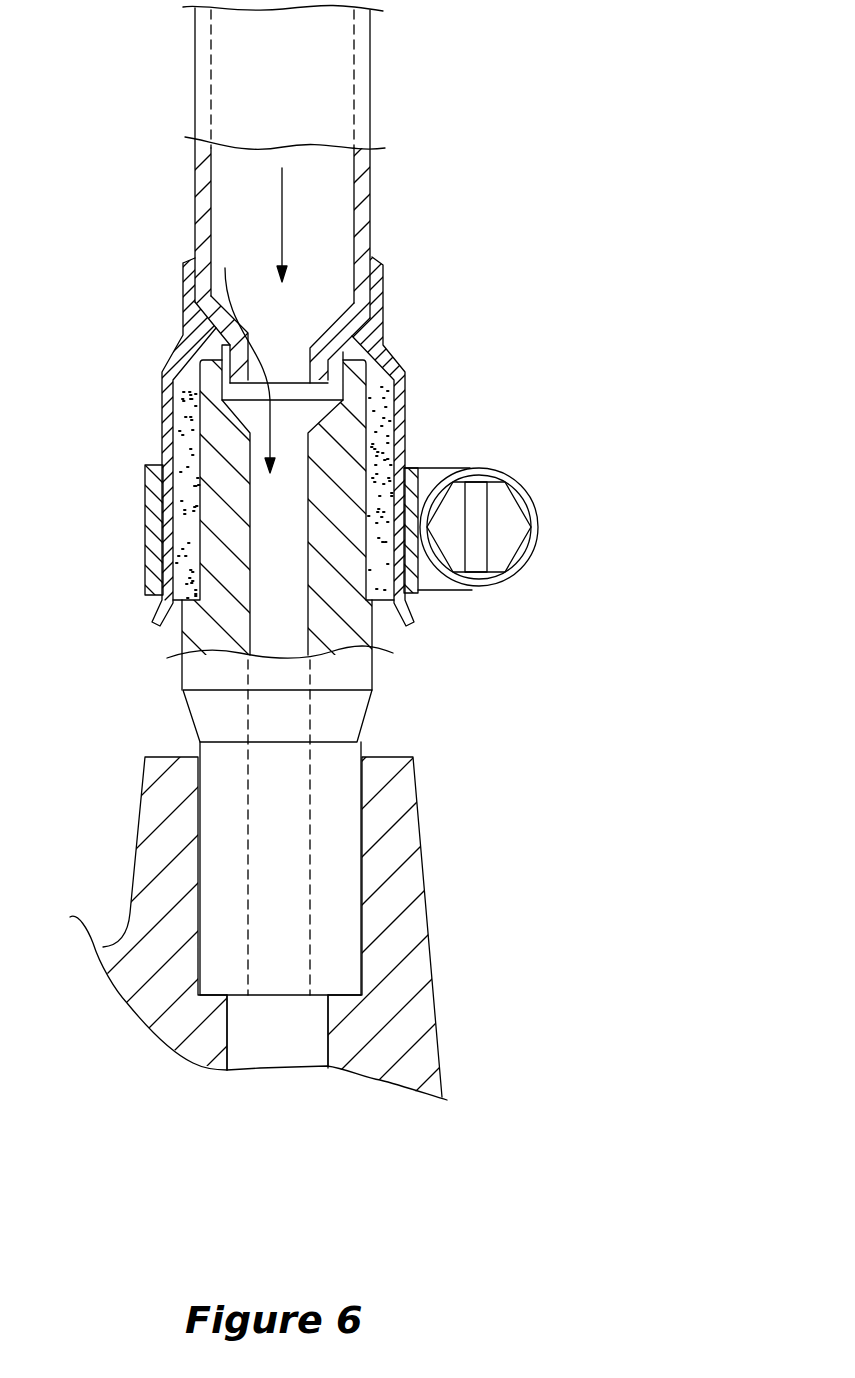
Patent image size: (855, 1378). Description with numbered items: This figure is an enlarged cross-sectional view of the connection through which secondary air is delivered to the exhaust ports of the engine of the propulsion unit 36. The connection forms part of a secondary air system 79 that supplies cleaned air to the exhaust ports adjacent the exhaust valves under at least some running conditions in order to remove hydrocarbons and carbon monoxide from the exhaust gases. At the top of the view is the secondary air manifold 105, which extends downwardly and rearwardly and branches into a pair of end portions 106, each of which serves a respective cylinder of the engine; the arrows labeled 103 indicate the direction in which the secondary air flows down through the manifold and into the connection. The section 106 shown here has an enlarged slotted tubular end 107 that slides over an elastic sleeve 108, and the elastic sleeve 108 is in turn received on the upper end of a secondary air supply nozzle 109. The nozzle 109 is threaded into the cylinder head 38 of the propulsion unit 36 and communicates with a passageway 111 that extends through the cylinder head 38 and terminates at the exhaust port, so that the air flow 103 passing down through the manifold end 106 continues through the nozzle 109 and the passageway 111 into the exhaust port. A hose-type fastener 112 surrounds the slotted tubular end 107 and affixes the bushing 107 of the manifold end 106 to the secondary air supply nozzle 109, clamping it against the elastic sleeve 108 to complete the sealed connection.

The propulsion unit 36 is at (305, 959).
The cylinder head 38 is at (407, 835).
The secondary air system 79 is at (305, 347).
The flow path 103 is at (282, 220).
The secondary air manifold 105 is at (380, 44).
The end portion 106 is at (335, 117).
The slotted tubular end 107 is at (163, 396).
The elastic sleeve 108 is at (188, 437).
The secondary air supply nozzle 109 is at (350, 718).
The passageway 111 is at (275, 1048).
The hose-type fastener 112 is at (450, 454).